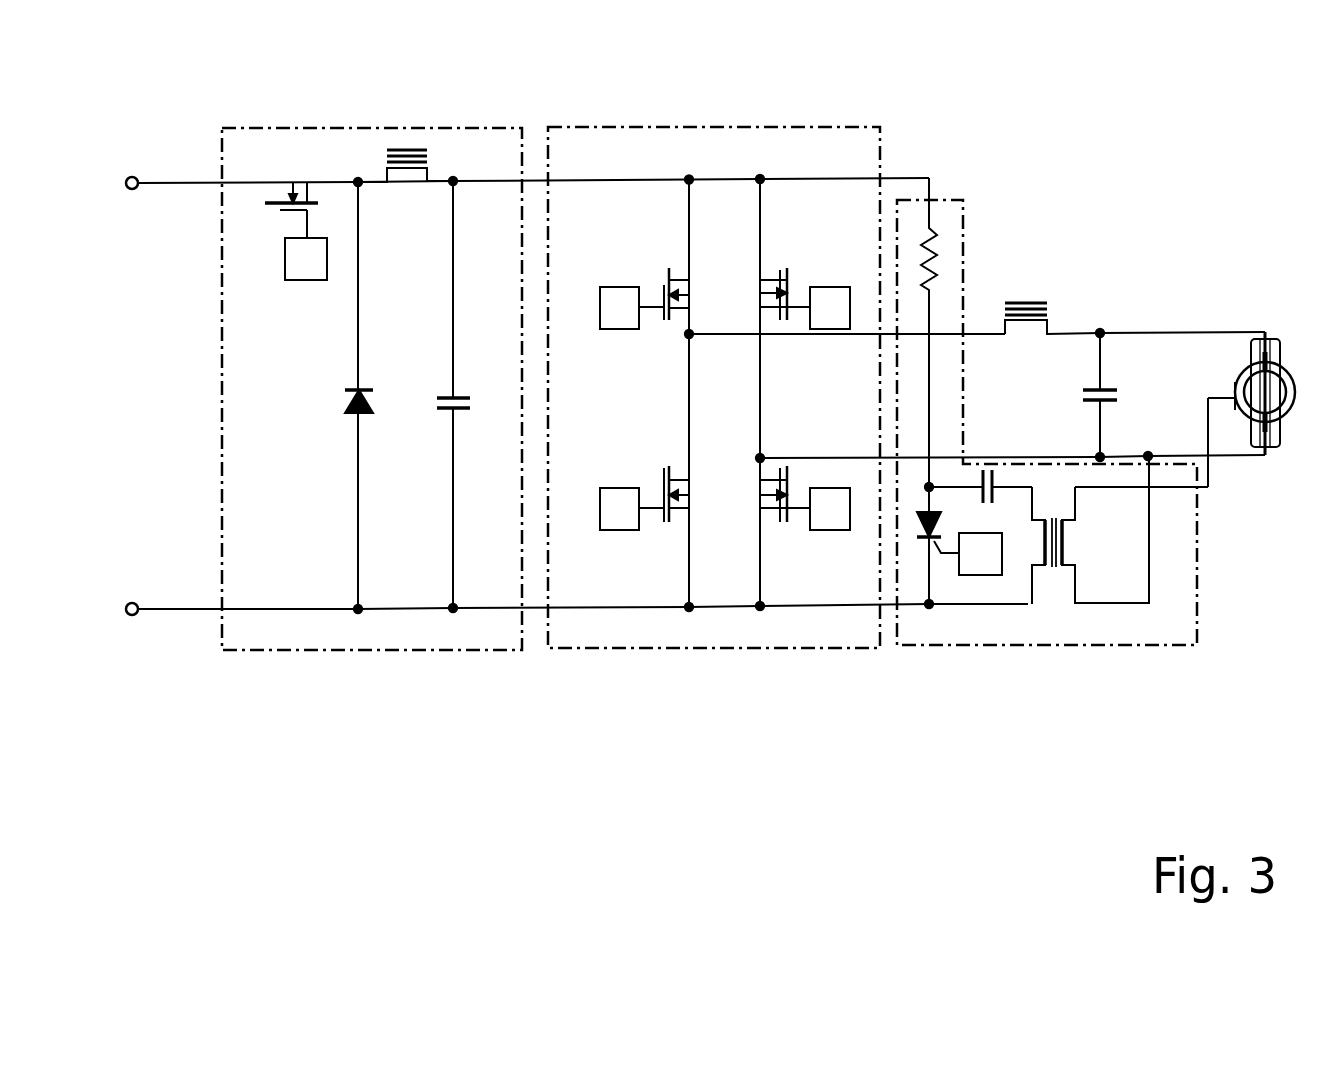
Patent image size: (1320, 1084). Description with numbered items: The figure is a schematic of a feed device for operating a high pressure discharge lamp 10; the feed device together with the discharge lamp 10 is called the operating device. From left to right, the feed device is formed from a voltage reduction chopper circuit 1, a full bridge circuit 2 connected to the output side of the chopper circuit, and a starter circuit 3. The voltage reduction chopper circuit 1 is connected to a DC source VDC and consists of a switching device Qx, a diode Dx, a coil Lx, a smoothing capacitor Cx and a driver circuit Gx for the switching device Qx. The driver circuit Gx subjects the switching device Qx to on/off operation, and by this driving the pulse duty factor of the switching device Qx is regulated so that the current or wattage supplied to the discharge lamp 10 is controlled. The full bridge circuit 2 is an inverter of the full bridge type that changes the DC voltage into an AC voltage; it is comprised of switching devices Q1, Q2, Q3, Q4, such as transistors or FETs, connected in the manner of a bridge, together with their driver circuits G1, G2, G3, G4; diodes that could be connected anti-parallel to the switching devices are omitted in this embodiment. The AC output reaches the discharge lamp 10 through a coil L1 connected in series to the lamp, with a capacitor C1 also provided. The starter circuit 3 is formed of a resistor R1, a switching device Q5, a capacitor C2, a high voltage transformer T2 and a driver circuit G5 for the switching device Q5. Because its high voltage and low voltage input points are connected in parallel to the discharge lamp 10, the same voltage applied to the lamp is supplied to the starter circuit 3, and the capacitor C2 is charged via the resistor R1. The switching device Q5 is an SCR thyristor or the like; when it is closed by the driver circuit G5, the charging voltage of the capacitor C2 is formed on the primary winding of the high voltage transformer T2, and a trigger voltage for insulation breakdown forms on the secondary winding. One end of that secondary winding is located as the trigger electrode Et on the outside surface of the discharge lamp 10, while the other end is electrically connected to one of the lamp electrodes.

The voltage reduction chopper circuit 1 is at (352, 655).
The full bridge circuit 2 is at (702, 655).
The starter circuit 3 is at (1034, 655).
The discharge lamp 10 is at (1263, 465).
The DC source VDC is at (132, 213).
The switching device Qx is at (266, 206).
The driver circuit Gx is at (306, 282).
The coil Lx is at (420, 185).
The diode Dx is at (371, 411).
The smoothing capacitor Cx is at (462, 411).
The switching device Q1 is at (660, 269).
The switching device Q2 is at (662, 466).
The switching device Q3 is at (784, 266).
The switching device Q4 is at (793, 531).
The driver circuit G1 is at (621, 338).
The driver circuit G2 is at (623, 537).
The driver circuit G3 is at (835, 285).
The driver circuit G4 is at (842, 539).
The resistor R1 is at (959, 332).
The coil L1 is at (1052, 304).
The capacitor C1 is at (1119, 395).
The capacitor C2 is at (995, 472).
The switching device Q5 is at (921, 545).
The driver circuit G5 is at (981, 578).
The high voltage transformer T2 is at (1051, 568).
The trigger electrode Et is at (1247, 409).